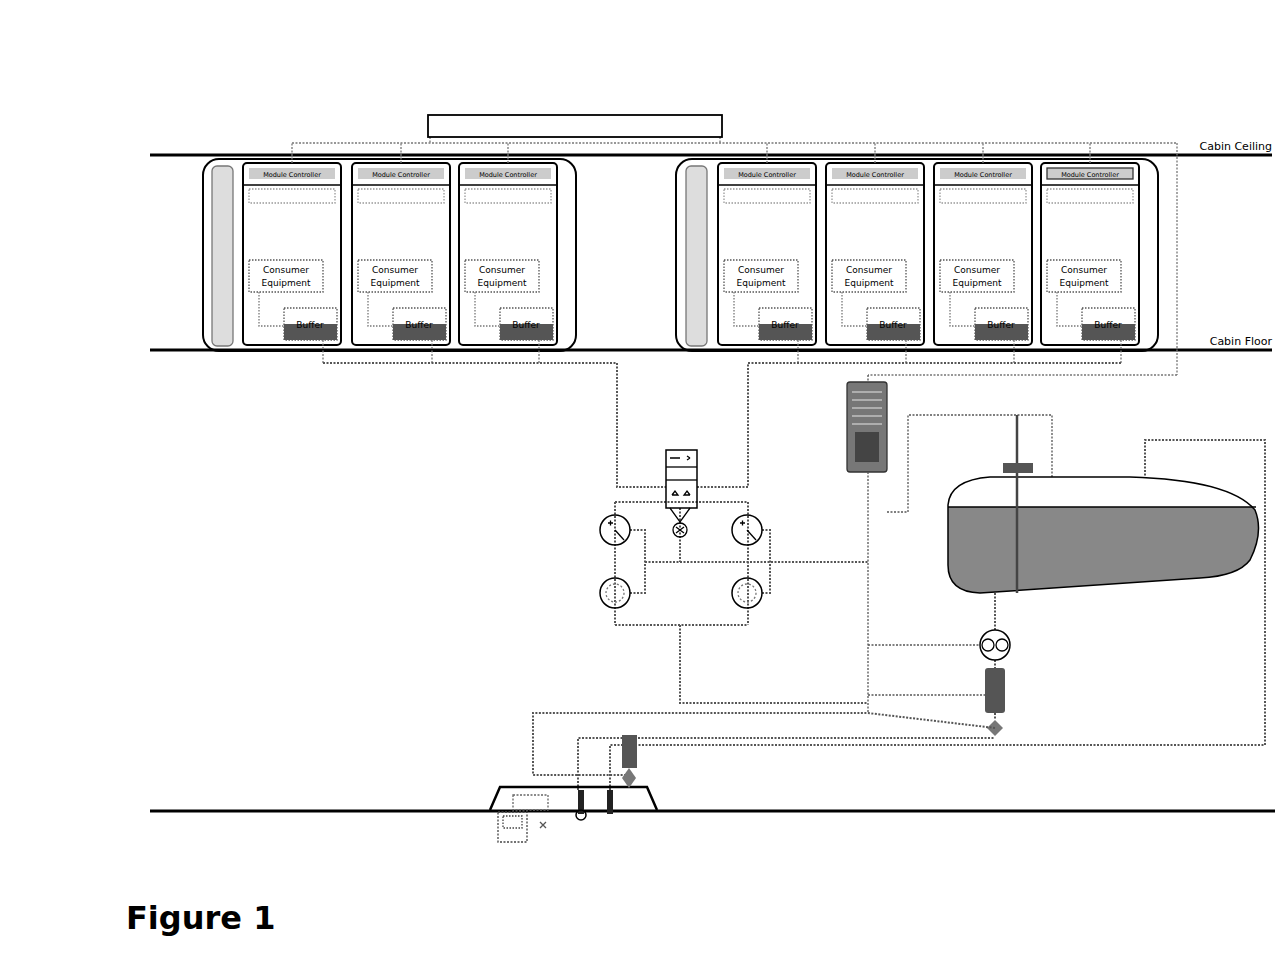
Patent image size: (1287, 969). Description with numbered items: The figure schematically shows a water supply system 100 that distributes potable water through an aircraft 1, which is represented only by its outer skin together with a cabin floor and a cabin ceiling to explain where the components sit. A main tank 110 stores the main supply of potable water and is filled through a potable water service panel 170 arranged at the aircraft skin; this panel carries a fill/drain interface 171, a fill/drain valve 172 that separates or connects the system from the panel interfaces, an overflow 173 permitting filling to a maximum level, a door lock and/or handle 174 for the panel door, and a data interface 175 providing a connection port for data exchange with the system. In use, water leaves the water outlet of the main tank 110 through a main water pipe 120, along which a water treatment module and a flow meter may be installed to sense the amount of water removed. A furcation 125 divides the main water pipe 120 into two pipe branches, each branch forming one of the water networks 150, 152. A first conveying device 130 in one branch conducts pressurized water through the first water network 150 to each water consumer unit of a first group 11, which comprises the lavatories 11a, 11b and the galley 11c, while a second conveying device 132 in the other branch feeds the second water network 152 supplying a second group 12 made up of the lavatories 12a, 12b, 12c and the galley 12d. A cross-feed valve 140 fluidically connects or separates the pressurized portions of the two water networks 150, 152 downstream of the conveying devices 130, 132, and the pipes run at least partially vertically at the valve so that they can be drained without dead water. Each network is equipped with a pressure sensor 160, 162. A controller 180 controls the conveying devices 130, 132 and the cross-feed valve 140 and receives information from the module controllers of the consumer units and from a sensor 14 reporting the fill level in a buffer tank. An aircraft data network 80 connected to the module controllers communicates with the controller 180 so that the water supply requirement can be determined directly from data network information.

The aircraft 1 is at (1152, 812).
The water supply system 100 is at (330, 515).
The first group of water consumer units 11 is at (392, 202).
The lavatory 11a is at (322, 163).
The lavatory 11b is at (430, 163).
The galley 11c is at (540, 163).
The second group of water consumer units 12 is at (963, 200).
The lavatory 12a is at (798, 163).
The lavatory 12b is at (907, 163).
The lavatory 12c is at (1012, 163).
The galley 12d is at (1120, 163).
The sensor 14 is at (1137, 182).
The aircraft data network 80 is at (675, 115).
The main tank 110 is at (1155, 592).
The main water pipe 120 is at (907, 720).
The furcation 125 is at (660, 625).
The first conveying device 130 is at (602, 598).
The second conveying device 132 is at (762, 600).
The cross-feed valve 140 is at (666, 485).
The first water network 150 is at (617, 378).
The second water network 152 is at (1083, 365).
The pressure sensor 160 is at (605, 518).
The pressure sensor 162 is at (753, 518).
The potable water service panel 170 is at (623, 835).
The fill/drain interface 171 is at (581, 822).
The fill/drain valve 172 is at (627, 793).
The overflow 173 is at (611, 820).
The door lock and/or handle 174 is at (549, 828).
The data interface 175 is at (512, 845).
The controller 180 is at (850, 458).